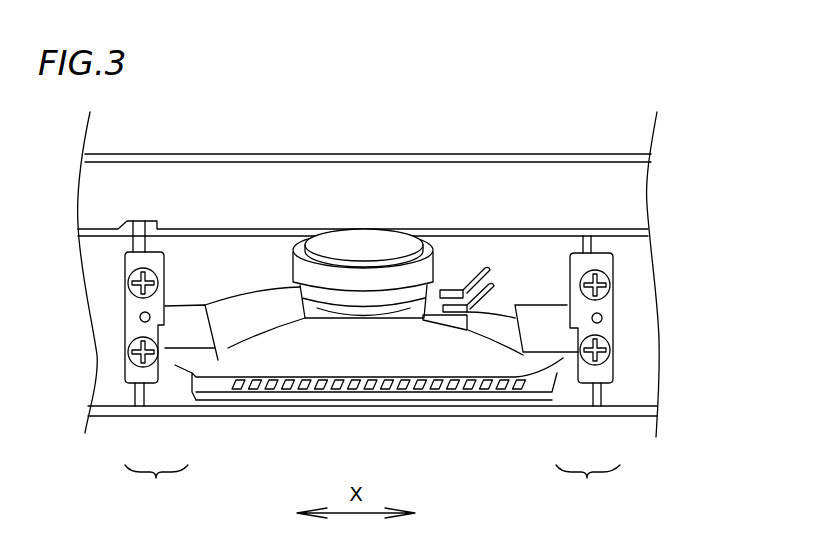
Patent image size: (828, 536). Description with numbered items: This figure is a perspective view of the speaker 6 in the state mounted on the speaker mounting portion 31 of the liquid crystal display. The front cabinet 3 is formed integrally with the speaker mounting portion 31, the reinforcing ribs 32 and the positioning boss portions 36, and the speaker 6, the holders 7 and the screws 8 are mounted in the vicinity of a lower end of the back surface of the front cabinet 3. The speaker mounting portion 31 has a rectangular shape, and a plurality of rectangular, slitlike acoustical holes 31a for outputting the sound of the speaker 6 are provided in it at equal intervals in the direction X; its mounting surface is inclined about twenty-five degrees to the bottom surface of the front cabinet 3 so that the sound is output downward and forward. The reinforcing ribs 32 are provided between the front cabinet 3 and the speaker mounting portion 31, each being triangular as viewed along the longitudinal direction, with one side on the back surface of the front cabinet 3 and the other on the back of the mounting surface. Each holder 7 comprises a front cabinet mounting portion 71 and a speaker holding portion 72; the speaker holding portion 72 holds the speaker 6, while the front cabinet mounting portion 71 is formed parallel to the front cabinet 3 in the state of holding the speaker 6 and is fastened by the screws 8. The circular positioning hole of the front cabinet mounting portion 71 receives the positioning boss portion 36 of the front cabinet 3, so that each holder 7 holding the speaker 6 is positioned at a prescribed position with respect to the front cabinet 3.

The front cabinet 3 is at (374, 200).
The speaker 6 is at (270, 313).
The holder 7 is at (372, 485).
The screw 8 is at (163, 280).
The speaker mounting portion 31 is at (215, 395).
The acoustical hole 31a is at (511, 394).
The reinforcing rib 32 is at (262, 391).
The positioning boss portion 36 is at (140, 319).
The front cabinet mounting portion 71 is at (134, 388).
The speaker holding portion 72 is at (183, 372).